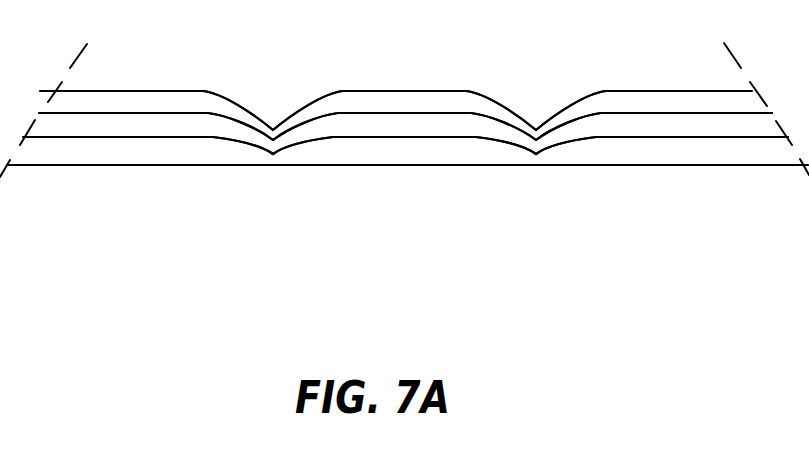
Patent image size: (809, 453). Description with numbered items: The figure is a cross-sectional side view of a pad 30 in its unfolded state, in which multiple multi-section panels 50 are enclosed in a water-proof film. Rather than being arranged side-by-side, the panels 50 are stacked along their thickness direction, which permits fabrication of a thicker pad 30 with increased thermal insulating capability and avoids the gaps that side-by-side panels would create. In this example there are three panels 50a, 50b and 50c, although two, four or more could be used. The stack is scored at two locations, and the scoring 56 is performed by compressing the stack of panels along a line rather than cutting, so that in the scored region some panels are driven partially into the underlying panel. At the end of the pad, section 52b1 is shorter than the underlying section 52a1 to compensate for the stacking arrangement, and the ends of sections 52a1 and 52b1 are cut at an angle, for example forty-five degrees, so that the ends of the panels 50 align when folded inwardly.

The pad 30 is at (155, 197).
The panels 50 is at (405, 214).
The first panel 50a is at (393, 147).
The second panel 50b is at (418, 128).
The third panel 50c is at (451, 100).
The underlying section 52a1 is at (695, 125).
The shorter section 52b1 is at (652, 150).
The scoring 56 is at (274, 122).